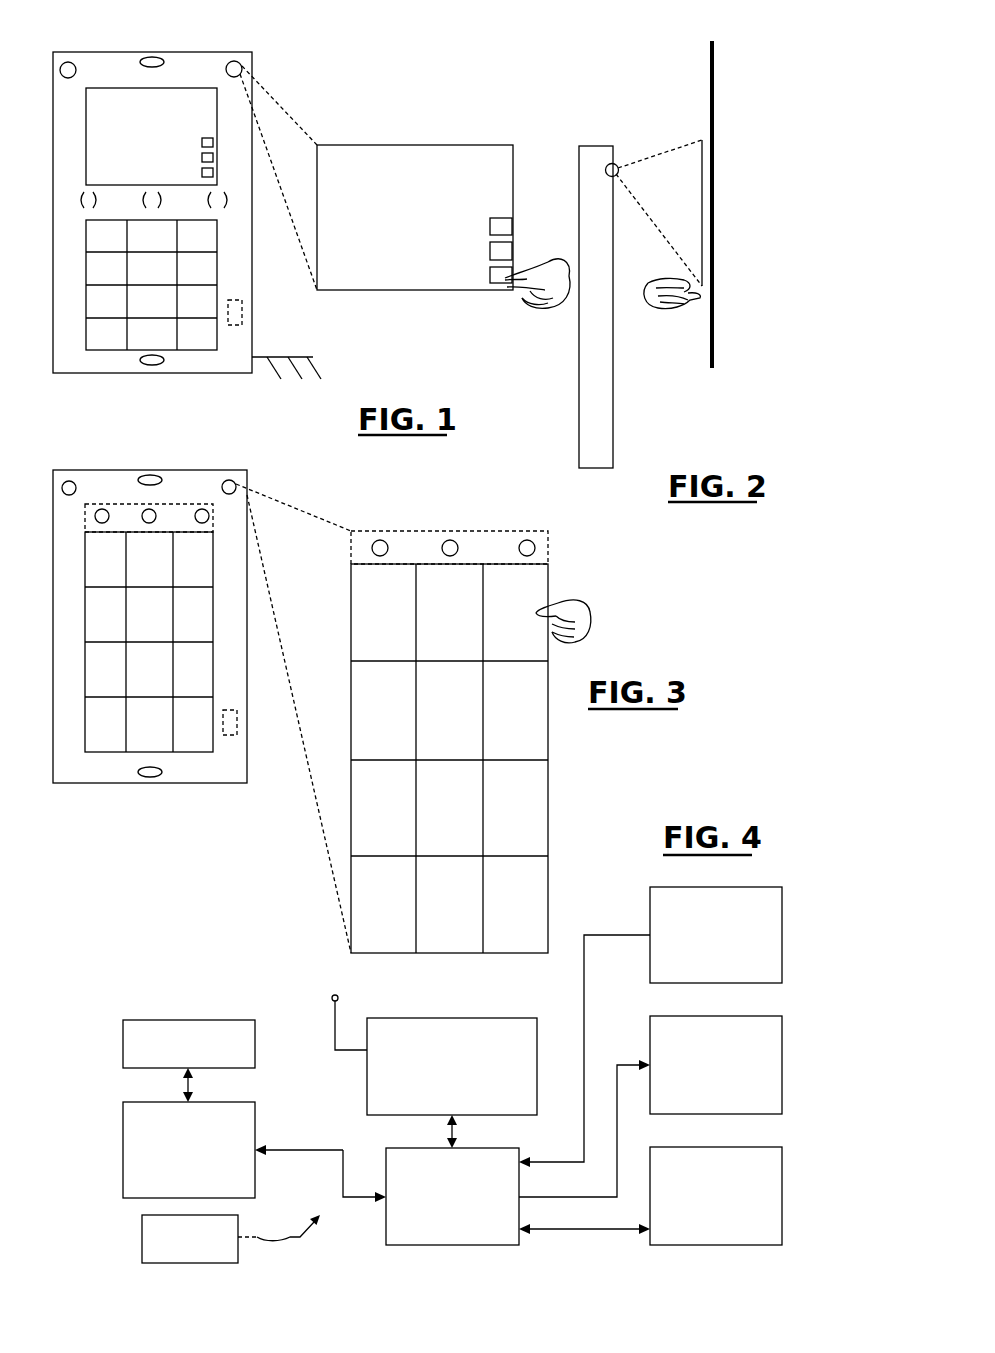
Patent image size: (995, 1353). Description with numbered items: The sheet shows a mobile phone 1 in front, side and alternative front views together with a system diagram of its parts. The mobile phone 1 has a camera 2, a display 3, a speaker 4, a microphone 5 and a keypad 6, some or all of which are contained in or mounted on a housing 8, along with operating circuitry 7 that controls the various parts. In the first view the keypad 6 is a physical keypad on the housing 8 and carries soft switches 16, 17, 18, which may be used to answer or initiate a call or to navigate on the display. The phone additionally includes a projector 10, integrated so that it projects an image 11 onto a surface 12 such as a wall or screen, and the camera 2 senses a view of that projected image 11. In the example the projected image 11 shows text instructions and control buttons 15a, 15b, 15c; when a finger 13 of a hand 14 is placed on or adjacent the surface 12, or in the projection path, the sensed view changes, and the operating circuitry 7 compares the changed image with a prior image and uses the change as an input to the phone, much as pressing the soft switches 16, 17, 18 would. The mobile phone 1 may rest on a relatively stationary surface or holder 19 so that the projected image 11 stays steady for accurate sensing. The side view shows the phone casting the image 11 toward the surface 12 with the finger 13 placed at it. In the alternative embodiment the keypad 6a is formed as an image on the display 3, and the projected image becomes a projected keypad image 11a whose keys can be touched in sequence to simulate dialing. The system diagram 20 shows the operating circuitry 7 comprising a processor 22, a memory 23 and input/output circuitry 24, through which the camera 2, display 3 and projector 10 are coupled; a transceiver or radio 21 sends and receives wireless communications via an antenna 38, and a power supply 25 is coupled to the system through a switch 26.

In FIG. 1, the mobile phone 1 is at (123, 0).
In FIG. 2, the mobile phone 1 is at (597, 115).
In FIG. 3, the mobile phone 1 is at (72, 434).
In FIG. 1, the camera 2 is at (74, 62).
In FIG. 3, the camera 2 is at (62, 485).
In FIG. 4, the camera 2 is at (782, 944).
In FIG. 1, the display 3 is at (115, 88).
In FIG. 3, the display 3 is at (117, 504).
In FIG. 4, the display 3 is at (782, 1185).
In FIG. 1, the speaker 4 is at (158, 58).
In FIG. 3, the speaker 4 is at (160, 477).
In FIG. 1, the microphone 5 is at (148, 366).
In FIG. 3, the microphone 5 is at (140, 775).
In FIG. 1, the keypad 6 is at (200, 340).
In FIG. 3, the keypad image 6a is at (193, 730).
In FIG. 1, the operating circuitry 7 is at (242, 308).
In FIG. 3, the operating circuitry 7 is at (237, 720).
In FIG. 4, the operating circuitry 7 is at (152, 1000).
In FIG. 1, the housing 8 is at (252, 253).
In FIG. 3, the housing 8 is at (245, 667).
In FIG. 1, the projector 10 is at (244, 66).
In FIG. 2, the projector 10 is at (615, 163).
In FIG. 3, the projector 10 is at (235, 482).
In FIG. 4, the projector 10 is at (782, 1066).
In FIG. 1, the projected image 11 is at (494, 98).
In FIG. 2, the projected image 11 is at (663, 153).
In FIG. 3, the projected keypad image 11a is at (513, 490).
In FIG. 2, the surface 12 is at (710, 75).
In FIG. 1, the finger 13 is at (505, 284).
In FIG. 2, the finger 13 is at (690, 318).
In FIG. 3, the finger 13 is at (540, 608).
In FIG. 1, the hand 14 is at (541, 310).
In FIG. 1, the control button 15a is at (213, 142).
In FIG. 1, the control button 15b is at (213, 158).
In FIG. 1, the control button 15c is at (213, 173).
In FIG. 1, the soft switch 16 is at (80, 203).
In FIG. 3, the soft switch 16 is at (95, 514).
In FIG. 1, the soft switch 17 is at (142, 205).
In FIG. 3, the soft switch 17 is at (142, 518).
In FIG. 1, the soft switch 18 is at (225, 197).
In FIG. 3, the soft switch 18 is at (210, 516).
In FIG. 1, the stationary surface or holder 19 is at (295, 357).
In FIG. 4, the system diagram 20 is at (272, 999).
In FIG. 4, the transceiver or radio 21 is at (471, 1018).
In FIG. 4, the processor 22 is at (123, 1125).
In FIG. 4, the memory 23 is at (123, 1047).
In FIG. 4, the input/output circuitry 24 is at (386, 1163).
In FIG. 4, the power supply 25 is at (142, 1235).
In FIG. 4, the switch 26 is at (272, 1240).
In FIG. 4, the antenna 38 is at (336, 994).